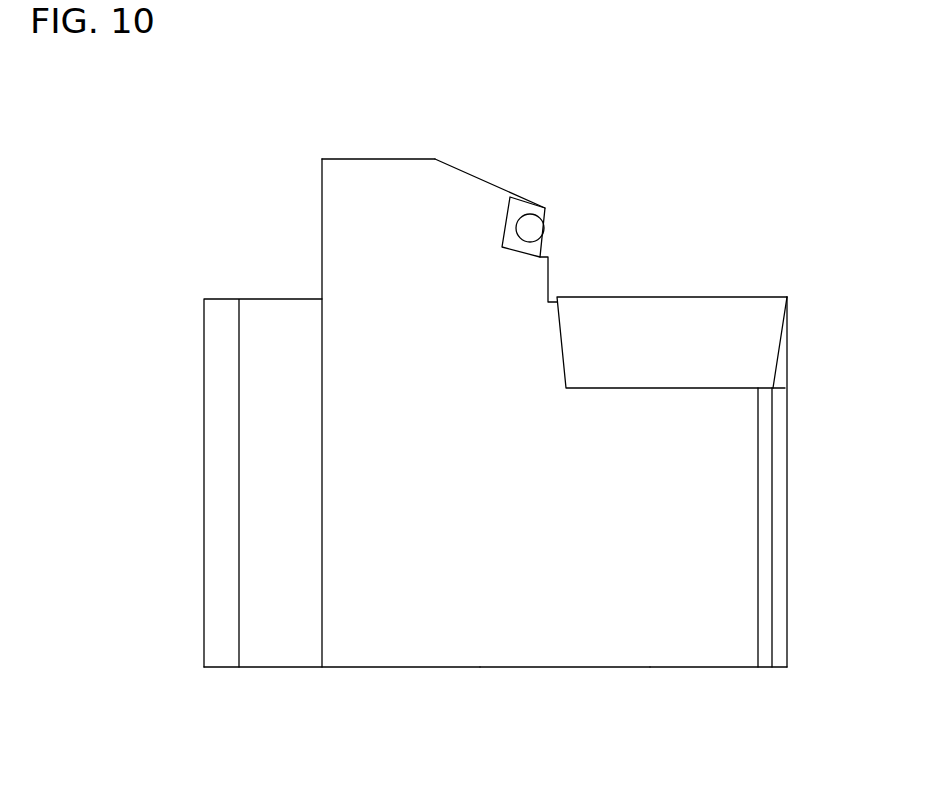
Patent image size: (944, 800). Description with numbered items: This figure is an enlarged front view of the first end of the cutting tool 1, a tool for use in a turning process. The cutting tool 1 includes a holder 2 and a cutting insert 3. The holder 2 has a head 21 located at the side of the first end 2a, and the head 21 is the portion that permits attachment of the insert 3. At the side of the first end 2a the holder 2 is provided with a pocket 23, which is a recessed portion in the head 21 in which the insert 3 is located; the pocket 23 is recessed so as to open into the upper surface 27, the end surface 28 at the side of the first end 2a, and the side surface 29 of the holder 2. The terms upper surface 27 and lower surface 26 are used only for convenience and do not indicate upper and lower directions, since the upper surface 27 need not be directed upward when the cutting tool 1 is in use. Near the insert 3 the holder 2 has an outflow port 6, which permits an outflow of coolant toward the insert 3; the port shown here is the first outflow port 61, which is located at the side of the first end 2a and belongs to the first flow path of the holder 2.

The cutting tool 1 is at (817, 148).
The holder 2 is at (319, 157).
The first end 2a is at (703, 638).
The cutting insert 3 is at (750, 295).
The outflow port 6 is at (554, 192).
The head 21 is at (378, 159).
The pocket 23 is at (722, 374).
The lower surface 26 is at (538, 668).
The upper surface 27 is at (421, 159).
The end surface 28 is at (600, 638).
The side surface 29 is at (787, 549).
The first outflow port 61 is at (530, 210).